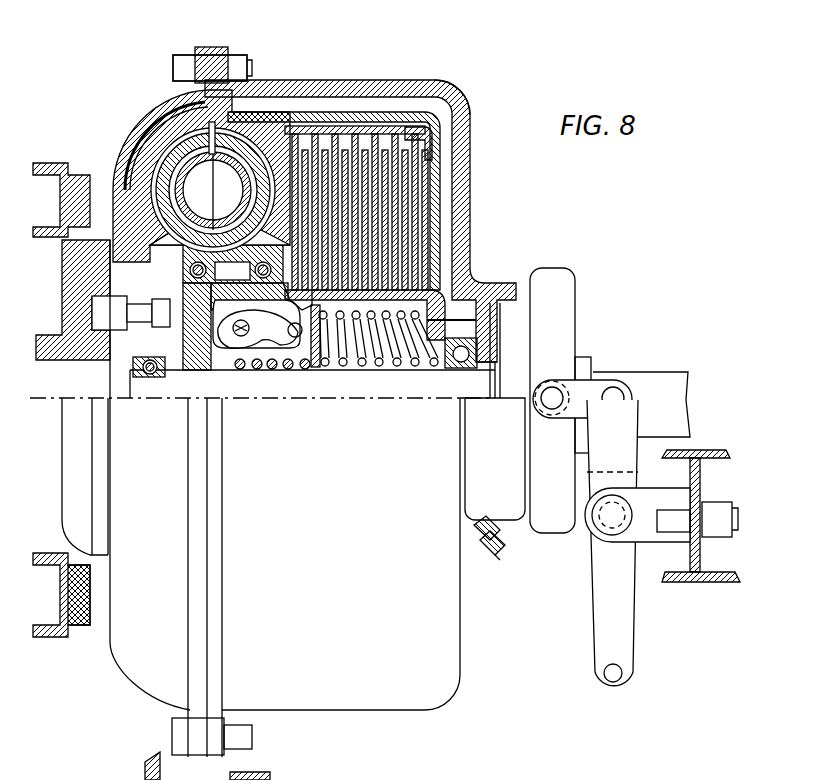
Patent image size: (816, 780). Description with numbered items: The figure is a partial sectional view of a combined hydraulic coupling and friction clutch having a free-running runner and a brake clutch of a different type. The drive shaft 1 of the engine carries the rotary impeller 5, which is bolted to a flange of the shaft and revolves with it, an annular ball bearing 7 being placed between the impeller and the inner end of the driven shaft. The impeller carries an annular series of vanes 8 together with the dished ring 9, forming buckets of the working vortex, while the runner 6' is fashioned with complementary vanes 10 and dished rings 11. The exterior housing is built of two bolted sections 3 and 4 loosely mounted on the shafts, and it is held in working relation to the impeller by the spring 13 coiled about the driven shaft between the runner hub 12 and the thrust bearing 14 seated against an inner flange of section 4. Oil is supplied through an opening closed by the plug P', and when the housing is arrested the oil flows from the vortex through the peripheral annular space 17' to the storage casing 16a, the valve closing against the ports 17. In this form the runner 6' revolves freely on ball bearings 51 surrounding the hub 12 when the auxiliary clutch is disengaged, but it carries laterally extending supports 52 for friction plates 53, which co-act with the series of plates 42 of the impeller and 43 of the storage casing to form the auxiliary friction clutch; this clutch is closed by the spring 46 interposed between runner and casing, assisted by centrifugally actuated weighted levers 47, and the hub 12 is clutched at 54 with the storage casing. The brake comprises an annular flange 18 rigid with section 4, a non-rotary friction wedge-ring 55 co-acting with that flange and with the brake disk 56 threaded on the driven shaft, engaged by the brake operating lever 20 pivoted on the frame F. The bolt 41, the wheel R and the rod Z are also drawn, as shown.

The drive shaft 1 is at (103, 397).
The housing section 3 is at (132, 124).
The housing section 4 is at (472, 162).
The impeller 5 is at (146, 158).
The runner 6' is at (251, 99).
The annular ball bearing 7 is at (150, 380).
The vanes 8 is at (213, 190).
The dished ring 9 is at (207, 190).
The vanes 10 is at (220, 225).
The dished rings 11 is at (217, 191).
The runner hub 12 is at (195, 360).
The spring 13 is at (257, 372).
The thrust bearing 14 is at (457, 370).
The storage casing 16a is at (435, 295).
The ports 17 is at (335, 212).
The peripheral annular space 17' is at (343, 70).
The annular flange 18 is at (505, 288).
The brake operating lever 20 is at (636, 664).
The bolt 41 is at (262, 80).
The friction plates 42 is at (437, 83).
The friction plates 43 is at (426, 136).
The spring 46 is at (375, 345).
The weighted levers 47 is at (282, 378).
The ball bearings 51 is at (183, 268).
The supports 52 is at (300, 133).
The friction plates 53 is at (370, 118).
The clutch 54 is at (261, 315).
The friction wedge-ring 55 is at (512, 335).
The brake disk 56 is at (500, 358).
The frame F is at (728, 452).
The plug P' is at (493, 555).
The wheel rim R is at (85, 630).
The rod Z is at (688, 370).